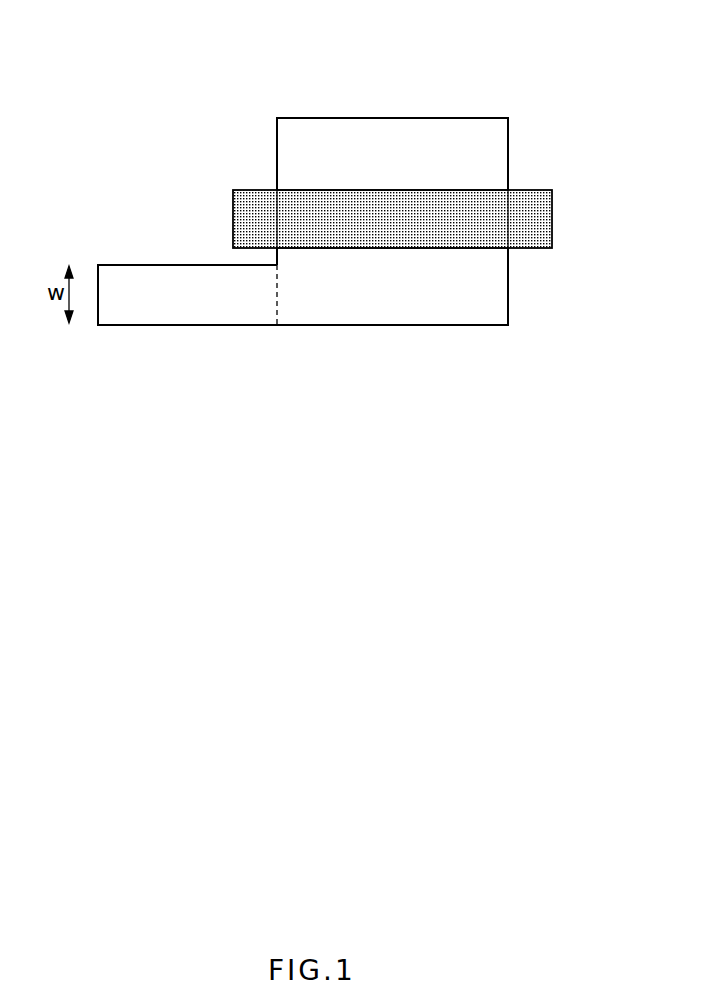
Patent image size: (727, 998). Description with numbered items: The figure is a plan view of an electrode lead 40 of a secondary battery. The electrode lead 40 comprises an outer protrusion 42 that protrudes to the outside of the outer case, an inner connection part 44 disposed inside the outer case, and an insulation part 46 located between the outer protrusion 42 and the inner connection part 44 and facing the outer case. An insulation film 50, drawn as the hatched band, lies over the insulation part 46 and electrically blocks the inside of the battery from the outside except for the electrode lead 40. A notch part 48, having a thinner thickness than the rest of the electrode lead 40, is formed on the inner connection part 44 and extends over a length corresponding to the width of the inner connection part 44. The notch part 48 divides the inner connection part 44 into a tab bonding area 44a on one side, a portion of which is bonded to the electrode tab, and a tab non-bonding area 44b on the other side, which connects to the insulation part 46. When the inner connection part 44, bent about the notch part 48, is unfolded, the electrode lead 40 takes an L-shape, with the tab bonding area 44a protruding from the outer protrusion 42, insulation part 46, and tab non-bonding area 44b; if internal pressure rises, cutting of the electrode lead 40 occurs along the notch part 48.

The electrode lead 40 is at (361, 196).
The outer protrusion 42 is at (508, 152).
The inner connection part 44 is at (303, 252).
The tab bonding area 44a is at (198, 318).
The tab non-bonding area 44b is at (404, 316).
The insulation part 46 is at (318, 198).
The notch part 48 is at (277, 303).
The insulation film 50 is at (552, 215).